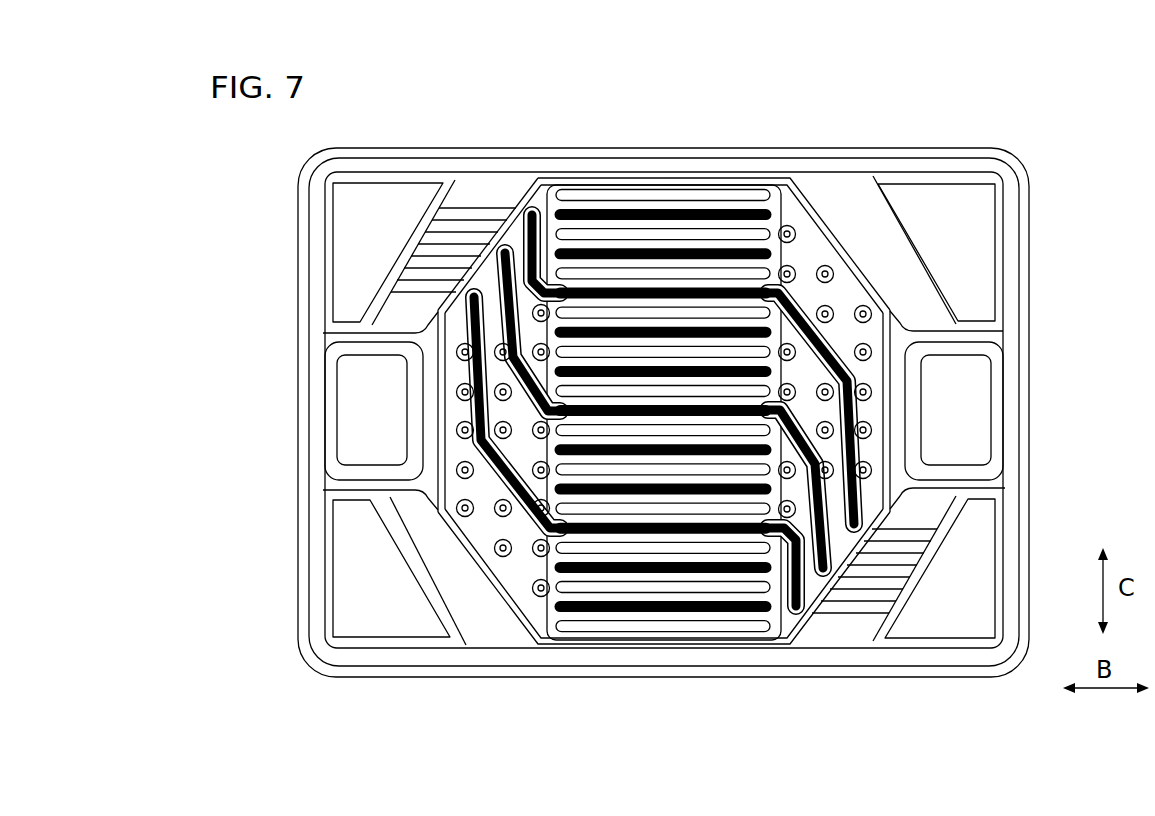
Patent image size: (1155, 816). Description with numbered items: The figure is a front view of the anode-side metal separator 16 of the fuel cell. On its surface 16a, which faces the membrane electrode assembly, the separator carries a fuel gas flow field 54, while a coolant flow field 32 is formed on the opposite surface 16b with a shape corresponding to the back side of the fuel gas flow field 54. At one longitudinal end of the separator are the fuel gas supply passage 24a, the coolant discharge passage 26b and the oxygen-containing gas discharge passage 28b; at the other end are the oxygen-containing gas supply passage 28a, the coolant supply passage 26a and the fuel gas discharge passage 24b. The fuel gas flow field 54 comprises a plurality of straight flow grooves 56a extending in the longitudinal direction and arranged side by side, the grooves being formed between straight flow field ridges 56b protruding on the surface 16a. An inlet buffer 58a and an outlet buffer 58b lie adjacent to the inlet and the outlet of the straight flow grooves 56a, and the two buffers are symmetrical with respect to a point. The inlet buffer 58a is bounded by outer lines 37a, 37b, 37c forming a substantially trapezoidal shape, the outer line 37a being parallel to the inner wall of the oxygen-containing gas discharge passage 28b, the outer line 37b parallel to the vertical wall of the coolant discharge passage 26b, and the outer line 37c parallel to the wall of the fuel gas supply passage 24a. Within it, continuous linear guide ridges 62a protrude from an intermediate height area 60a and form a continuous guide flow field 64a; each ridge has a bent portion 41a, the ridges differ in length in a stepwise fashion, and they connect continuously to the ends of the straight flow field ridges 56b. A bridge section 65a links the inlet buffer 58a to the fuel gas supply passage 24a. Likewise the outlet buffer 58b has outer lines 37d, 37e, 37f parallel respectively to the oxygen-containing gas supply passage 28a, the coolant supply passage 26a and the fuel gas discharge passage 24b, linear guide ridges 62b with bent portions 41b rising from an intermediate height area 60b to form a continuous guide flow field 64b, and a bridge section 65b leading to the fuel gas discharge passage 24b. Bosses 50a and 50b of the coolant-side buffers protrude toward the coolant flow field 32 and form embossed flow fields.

The anode-side metal separator 16 is at (276, 141).
The surface 16a is at (959, 673).
The surface 16b is at (1007, 673).
The fuel gas supply passage 24a is at (419, 256).
The fuel gas discharge passage 24b is at (908, 564).
The coolant supply passage 26a is at (970, 402).
The coolant discharge passage 26b is at (365, 395).
The oxygen-containing gas supply passage 28a is at (938, 253).
The oxygen-containing gas discharge passage 28b is at (394, 567).
The coolant flow field 32 is at (622, 208).
The outer line 37a is at (442, 622).
The outer line 37b is at (455, 447).
The outer line 37c is at (490, 278).
The outer line 37d is at (841, 244).
The outer line 37e is at (893, 355).
The outer line 37f is at (868, 545).
The bent portion 41a is at (490, 450).
The bent portion 41b is at (838, 372).
The bosses 50a is at (862, 522).
The bosses 50b is at (468, 300).
The fuel gas flow field 54 is at (667, 197).
The straight flow grooves 56a is at (700, 628).
The straight flow field ridges 56b is at (614, 609).
The inlet buffer 58a is at (515, 238).
The outlet buffer 58b is at (842, 352).
The intermediate height area 60a is at (532, 528).
The intermediate height area 60b is at (797, 286).
The linear guide ridges 62a is at (503, 566).
The linear guide ridges 62b is at (786, 372).
The continuous guide flow field 64a is at (523, 452).
The continuous guide flow field 64b is at (806, 370).
The bridge section 65a is at (447, 222).
The bridge section 65b is at (882, 597).